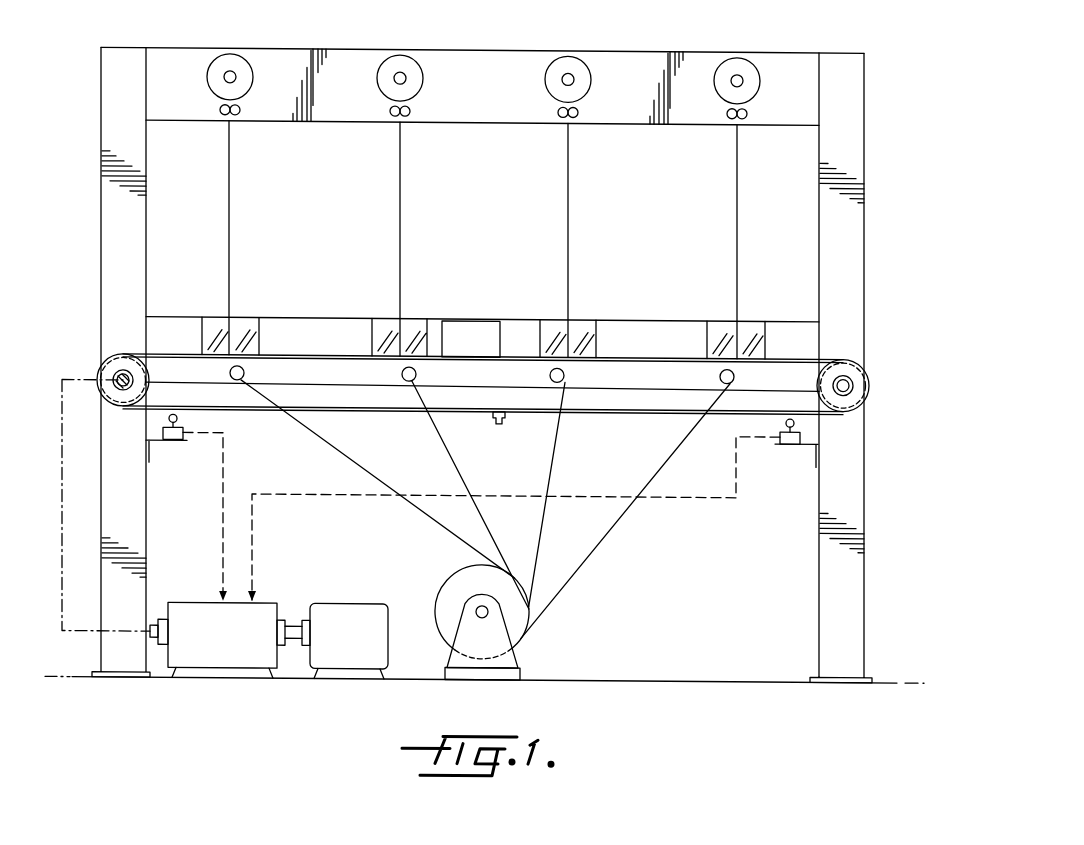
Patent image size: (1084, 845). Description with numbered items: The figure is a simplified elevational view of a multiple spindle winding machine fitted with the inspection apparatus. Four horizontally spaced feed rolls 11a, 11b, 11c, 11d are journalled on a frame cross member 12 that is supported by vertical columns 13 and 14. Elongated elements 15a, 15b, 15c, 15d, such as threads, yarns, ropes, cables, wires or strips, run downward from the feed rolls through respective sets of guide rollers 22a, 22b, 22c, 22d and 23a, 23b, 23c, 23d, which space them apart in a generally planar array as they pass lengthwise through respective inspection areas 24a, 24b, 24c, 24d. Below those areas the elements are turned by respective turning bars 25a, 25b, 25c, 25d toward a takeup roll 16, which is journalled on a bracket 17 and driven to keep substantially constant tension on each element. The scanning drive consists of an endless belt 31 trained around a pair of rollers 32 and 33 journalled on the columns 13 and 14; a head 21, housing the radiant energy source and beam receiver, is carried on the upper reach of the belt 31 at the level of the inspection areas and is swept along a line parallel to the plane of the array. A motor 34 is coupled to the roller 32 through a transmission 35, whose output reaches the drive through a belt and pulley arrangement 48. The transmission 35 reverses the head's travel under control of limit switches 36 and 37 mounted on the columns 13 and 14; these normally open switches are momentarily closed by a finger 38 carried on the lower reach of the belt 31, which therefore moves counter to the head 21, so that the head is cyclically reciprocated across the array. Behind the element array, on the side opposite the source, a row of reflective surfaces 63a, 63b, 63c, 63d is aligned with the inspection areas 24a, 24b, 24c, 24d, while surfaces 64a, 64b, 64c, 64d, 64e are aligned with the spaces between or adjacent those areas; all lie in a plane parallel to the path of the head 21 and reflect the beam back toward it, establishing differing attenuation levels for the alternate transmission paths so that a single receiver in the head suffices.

The feed roll 11a is at (212, 55).
The feed roll 11b is at (382, 55).
The feed roll 11c is at (550, 55).
The feed roll 11d is at (719, 55).
The frame cross member 12 is at (303, 48).
The vertical column 13 is at (103, 190).
The vertical column 14 is at (864, 208).
The elongated element 15a is at (233, 212).
The elongated element 15b is at (404, 216).
The elongated element 15c is at (572, 216).
The elongated element 15d is at (741, 218).
The takeup roll 16 is at (452, 578).
The bracket 17 is at (518, 656).
The head 21 is at (481, 315).
The guide roller 22a is at (217, 113).
The guide roller 22b is at (387, 113).
The guide roller 22c is at (555, 113).
The guide roller 22d is at (724, 113).
The guide roller 23a is at (238, 113).
The guide roller 23b is at (408, 113).
The guide roller 23c is at (576, 113).
The guide roller 23d is at (745, 113).
The inspection area 24a is at (266, 330).
The inspection area 24b is at (430, 322).
The inspection area 24c is at (604, 332).
The inspection area 24d is at (750, 330).
The turning bar 25a is at (246, 372).
The turning bar 25b is at (418, 372).
The turning bar 25c is at (566, 372).
The turning bar 25d is at (736, 372).
The endless belt 31 is at (349, 356).
The roller 32 is at (112, 368).
The roller 33 is at (856, 370).
The motor 34 is at (342, 600).
The transmission 35 is at (184, 600).
The limit switch 36 is at (178, 440).
The limit switch 37 is at (786, 440).
The finger 38 is at (503, 420).
The belt and pulley arrangement 48 is at (92, 634).
The reflective surface 63a is at (243, 320).
The reflective surface 63b is at (371, 326).
The reflective surface 63c is at (580, 320).
The reflective surface 63d is at (722, 328).
The reflective surface 64a is at (174, 326).
The reflective surface 64b is at (323, 327).
The reflective surface 64c is at (514, 326).
The reflective surface 64d is at (679, 326).
The reflective surface 64e is at (786, 326).